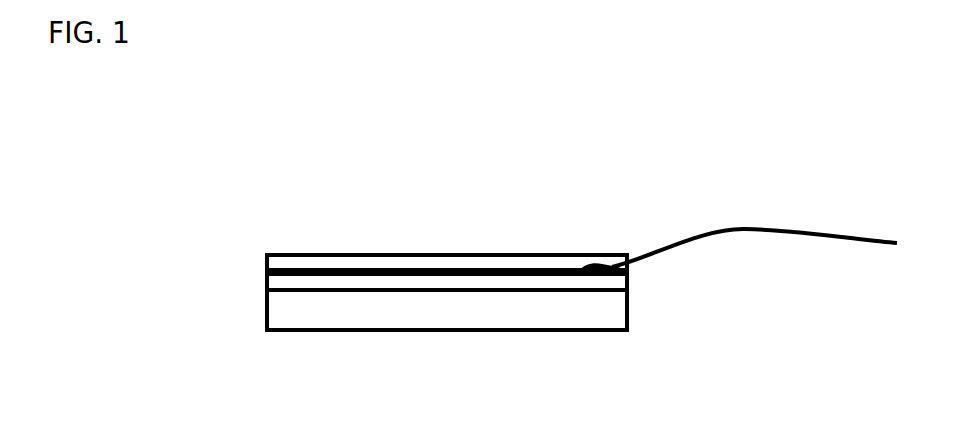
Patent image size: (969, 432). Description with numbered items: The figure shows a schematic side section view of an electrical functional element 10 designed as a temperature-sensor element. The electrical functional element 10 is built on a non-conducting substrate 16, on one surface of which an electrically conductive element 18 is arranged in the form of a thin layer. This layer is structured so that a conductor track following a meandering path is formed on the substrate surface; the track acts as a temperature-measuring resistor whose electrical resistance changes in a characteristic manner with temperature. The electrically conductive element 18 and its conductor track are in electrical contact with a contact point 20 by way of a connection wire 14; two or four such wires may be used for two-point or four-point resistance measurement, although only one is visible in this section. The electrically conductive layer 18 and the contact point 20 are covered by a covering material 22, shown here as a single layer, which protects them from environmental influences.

The electrical functional element 10 is at (595, 190).
The connection wire 14 is at (737, 228).
The non-conducting substrate 16 is at (267, 310).
The electrically conductive element 18 is at (267, 282).
The contact point 20 is at (595, 263).
The covering material 22 is at (267, 258).